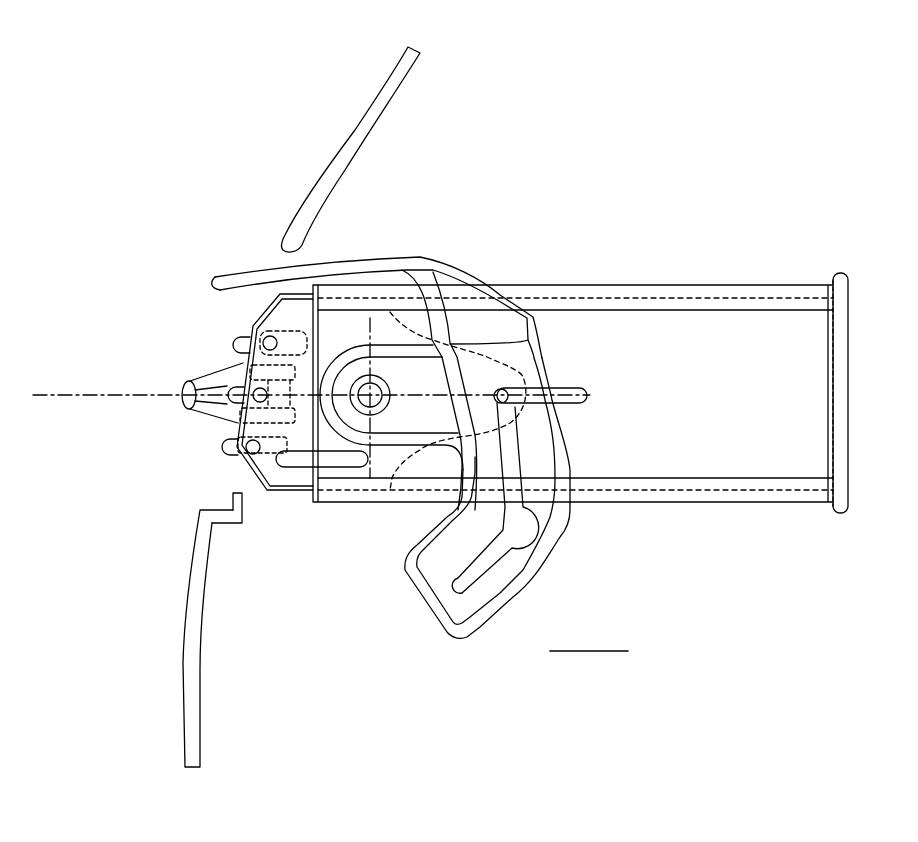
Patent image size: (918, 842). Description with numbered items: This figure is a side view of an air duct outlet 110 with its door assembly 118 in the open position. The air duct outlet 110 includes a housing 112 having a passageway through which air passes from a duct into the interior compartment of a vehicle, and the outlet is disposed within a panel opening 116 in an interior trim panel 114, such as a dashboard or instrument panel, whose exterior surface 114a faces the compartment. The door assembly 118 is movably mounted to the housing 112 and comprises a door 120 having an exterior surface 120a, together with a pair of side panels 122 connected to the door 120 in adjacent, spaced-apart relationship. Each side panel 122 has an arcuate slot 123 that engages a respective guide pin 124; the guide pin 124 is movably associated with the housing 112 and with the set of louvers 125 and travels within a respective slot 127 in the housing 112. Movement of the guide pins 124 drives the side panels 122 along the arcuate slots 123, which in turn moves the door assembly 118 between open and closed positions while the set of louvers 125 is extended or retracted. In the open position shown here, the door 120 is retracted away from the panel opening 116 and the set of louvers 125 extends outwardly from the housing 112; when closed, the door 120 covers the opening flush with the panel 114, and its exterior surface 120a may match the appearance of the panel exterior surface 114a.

The air duct outlet 110 is at (532, 160).
The housing 112 is at (630, 285).
The interior trim panel 114 is at (183, 665).
The exterior surface of panel 114a is at (185, 605).
The panel opening 116 is at (203, 483).
The door assembly 118 is at (515, 263).
The door 120 is at (365, 250).
The door exterior surface 120a is at (328, 252).
The side panel 122 is at (570, 457).
The arcuate slot 123 is at (512, 537).
The guide pin 124 is at (503, 390).
The set of louvers 125 is at (223, 417).
The slot 127 is at (575, 390).